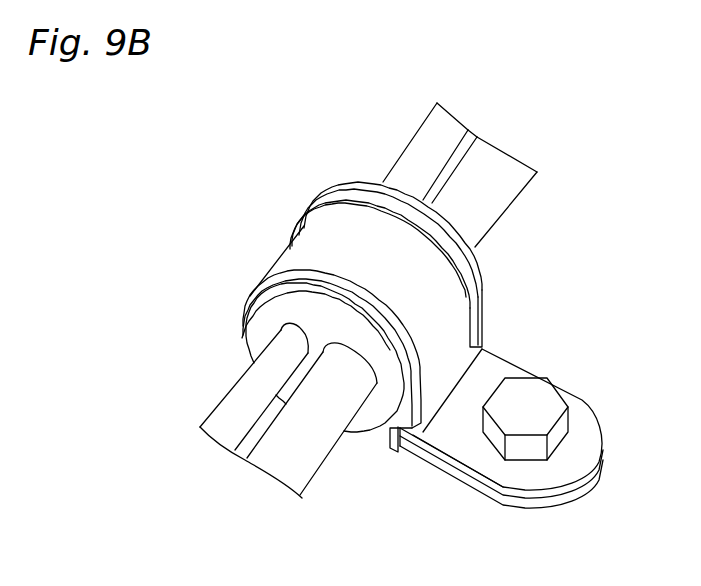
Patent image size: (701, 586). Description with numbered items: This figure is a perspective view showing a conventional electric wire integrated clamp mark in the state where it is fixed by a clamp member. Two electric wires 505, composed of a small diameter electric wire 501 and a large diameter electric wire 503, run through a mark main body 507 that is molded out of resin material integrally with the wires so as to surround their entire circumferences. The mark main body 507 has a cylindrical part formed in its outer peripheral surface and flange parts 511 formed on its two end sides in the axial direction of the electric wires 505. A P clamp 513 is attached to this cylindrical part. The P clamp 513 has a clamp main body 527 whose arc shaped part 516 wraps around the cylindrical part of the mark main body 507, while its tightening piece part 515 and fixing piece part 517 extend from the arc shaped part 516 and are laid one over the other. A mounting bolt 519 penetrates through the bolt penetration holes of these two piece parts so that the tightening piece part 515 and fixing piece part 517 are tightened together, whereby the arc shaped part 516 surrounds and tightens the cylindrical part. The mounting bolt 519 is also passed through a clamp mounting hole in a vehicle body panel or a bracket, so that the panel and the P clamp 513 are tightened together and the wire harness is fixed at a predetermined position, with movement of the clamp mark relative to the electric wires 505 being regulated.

The electric wires 505 is at (474, 133).
The small diameter electric wire 501 is at (445, 127).
The large diameter electric wire 503 is at (505, 158).
The mark main body 507 is at (263, 325).
The flange parts 511 is at (373, 190).
The P clamp 513 is at (285, 243).
The tightening piece part 515 is at (582, 418).
The arc shaped part 516 is at (352, 293).
The fixing piece part 517 is at (500, 505).
The mounting bolt 519 is at (543, 394).
The clamp main body 527 is at (463, 479).